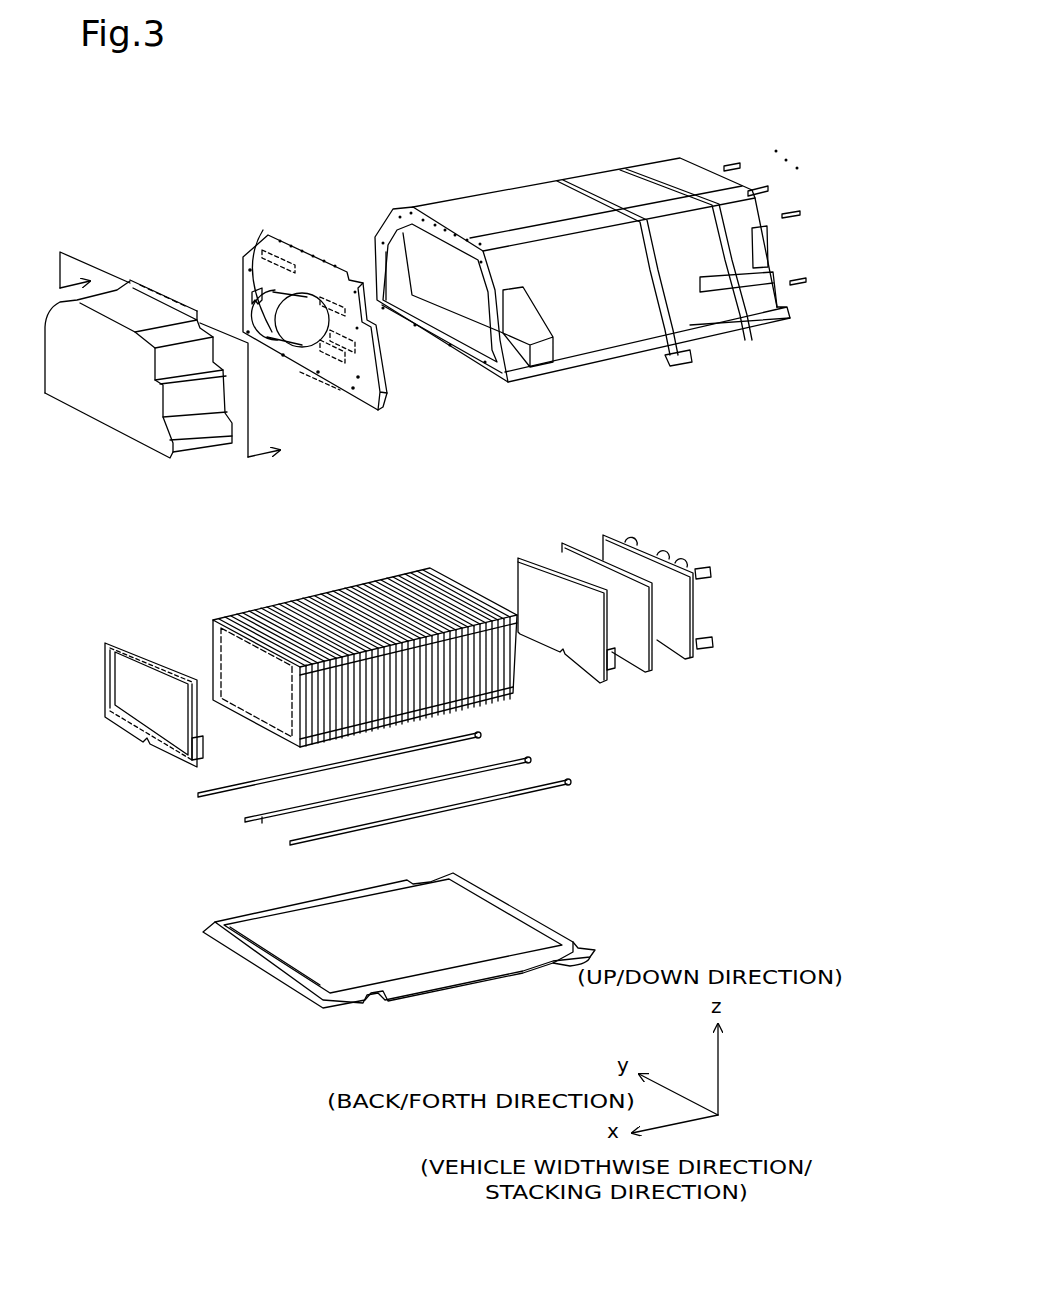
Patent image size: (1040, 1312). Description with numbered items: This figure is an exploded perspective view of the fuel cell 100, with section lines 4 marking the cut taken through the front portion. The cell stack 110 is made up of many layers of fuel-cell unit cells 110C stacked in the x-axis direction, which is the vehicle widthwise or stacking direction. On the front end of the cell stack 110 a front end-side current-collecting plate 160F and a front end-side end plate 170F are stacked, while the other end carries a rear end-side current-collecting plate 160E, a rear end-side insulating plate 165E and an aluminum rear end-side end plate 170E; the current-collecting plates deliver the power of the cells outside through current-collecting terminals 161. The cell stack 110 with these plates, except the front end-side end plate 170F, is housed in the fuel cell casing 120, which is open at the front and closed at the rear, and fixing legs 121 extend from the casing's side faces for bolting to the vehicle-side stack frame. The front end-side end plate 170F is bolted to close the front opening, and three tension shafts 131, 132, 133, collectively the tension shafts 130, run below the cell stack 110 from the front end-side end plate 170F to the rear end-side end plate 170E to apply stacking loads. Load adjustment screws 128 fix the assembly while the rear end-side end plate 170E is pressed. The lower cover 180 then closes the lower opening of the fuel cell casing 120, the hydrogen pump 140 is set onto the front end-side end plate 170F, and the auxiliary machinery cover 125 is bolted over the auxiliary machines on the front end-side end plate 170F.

The fuel cell 100 is at (218, 162).
The section line IV-IV 4 is at (170, 350).
The cell stack 110 is at (237, 554).
The fuel-cell unit cells 110C is at (337, 590).
The fuel cell casing 120 is at (650, 175).
The fixing legs 121 is at (740, 340).
The auxiliary machinery cover 125 is at (122, 403).
The load adjustment screws 128 is at (763, 188).
The tension shafts 130 is at (262, 902).
The tension shaft 131 is at (243, 821).
The tension shaft 132 is at (197, 796).
The tension shaft 133 is at (288, 844).
The hydrogen pump 140 is at (258, 245).
The front end-side current-collecting plate 160F is at (110, 637).
The rear end-side current-collecting plate 160E is at (525, 557).
The rear end-side insulating plate 165E is at (567, 547).
The rear end-side end plate 170E is at (615, 535).
The front end-side end plate 170F is at (332, 378).
The current-collecting terminals 161 is at (207, 745).
The lower cover 180 is at (443, 978).